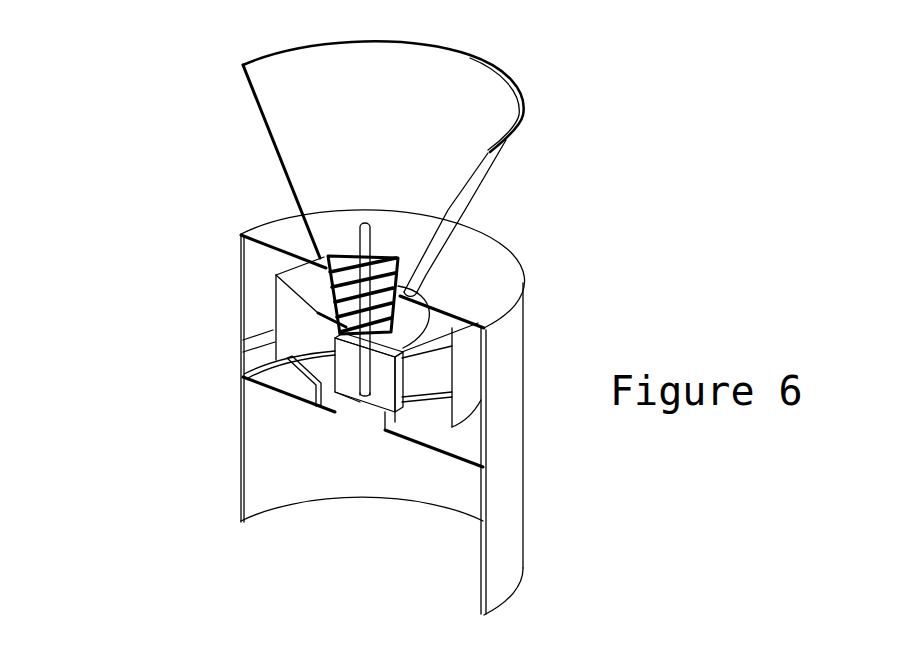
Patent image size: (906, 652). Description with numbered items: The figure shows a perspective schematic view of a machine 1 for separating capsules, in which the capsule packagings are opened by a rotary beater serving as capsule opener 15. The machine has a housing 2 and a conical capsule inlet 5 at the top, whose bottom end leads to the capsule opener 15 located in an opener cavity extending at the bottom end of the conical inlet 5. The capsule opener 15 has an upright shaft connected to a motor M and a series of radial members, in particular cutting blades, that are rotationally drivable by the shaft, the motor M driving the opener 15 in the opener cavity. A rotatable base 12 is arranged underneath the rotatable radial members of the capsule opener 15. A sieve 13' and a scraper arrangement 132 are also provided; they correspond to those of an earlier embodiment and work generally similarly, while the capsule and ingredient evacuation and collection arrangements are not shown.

The machine 1 is at (118, 68).
The housing 2 is at (516, 350).
The conical capsule inlet 5 is at (366, 110).
The rotatable base 12 is at (307, 291).
The sieve 13' is at (413, 405).
The capsule opener 15 is at (420, 246).
The scraper arrangement 132 is at (300, 379).
The motor M is at (352, 390).